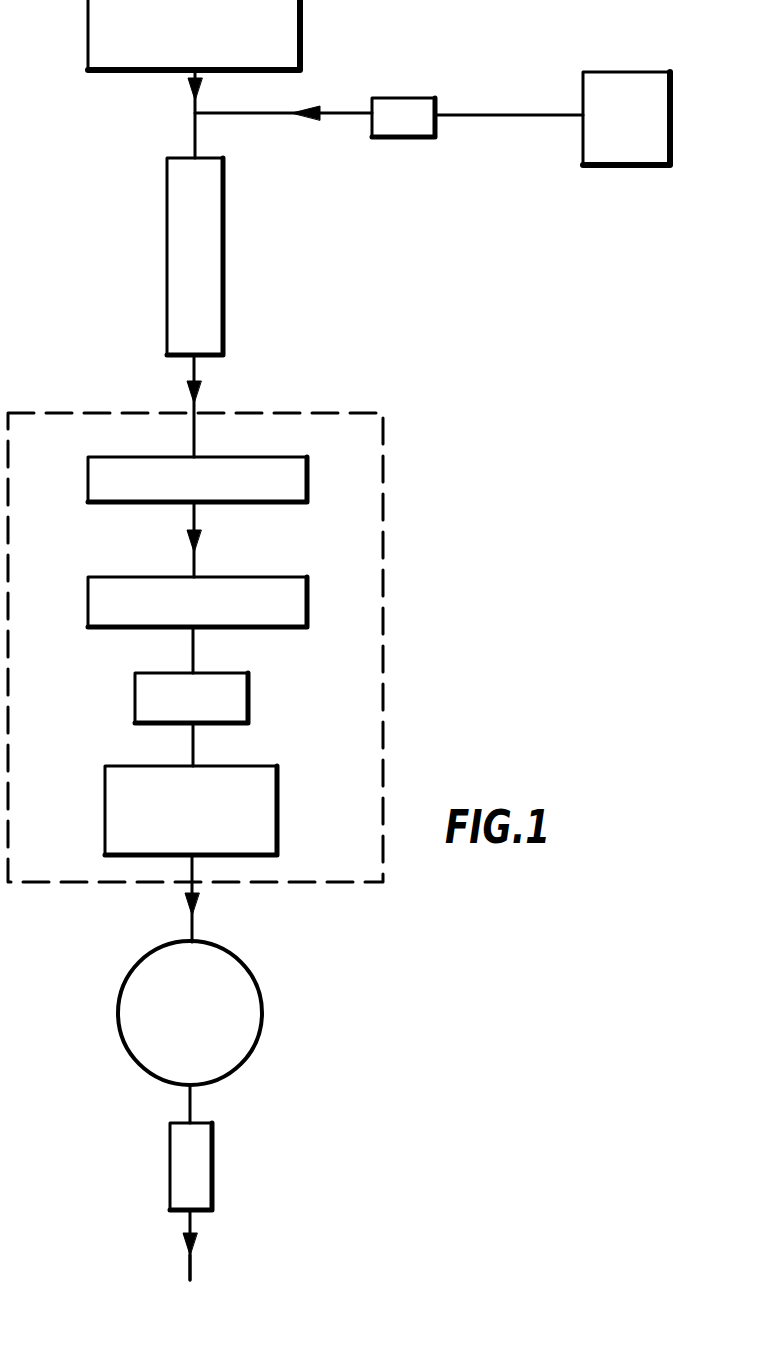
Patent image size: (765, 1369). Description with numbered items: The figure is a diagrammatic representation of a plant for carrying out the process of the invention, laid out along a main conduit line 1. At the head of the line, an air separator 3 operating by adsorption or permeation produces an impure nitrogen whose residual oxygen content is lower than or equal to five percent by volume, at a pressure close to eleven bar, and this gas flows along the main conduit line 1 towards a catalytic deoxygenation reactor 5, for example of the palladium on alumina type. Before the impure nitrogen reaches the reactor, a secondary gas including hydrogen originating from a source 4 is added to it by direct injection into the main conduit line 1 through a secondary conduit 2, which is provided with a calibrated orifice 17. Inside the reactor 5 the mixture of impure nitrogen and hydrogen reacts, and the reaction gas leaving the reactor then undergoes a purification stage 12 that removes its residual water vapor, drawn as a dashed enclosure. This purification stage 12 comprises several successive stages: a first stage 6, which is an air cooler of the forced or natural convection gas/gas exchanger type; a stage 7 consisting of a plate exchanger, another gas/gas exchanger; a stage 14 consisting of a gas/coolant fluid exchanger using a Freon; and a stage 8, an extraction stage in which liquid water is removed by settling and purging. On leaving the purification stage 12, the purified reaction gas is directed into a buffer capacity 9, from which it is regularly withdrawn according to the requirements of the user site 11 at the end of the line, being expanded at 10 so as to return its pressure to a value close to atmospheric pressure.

The main conduit line 1 is at (193, 104).
The secondary conduit 2 is at (518, 112).
The air separator 3 is at (300, 52).
The source 4 is at (583, 100).
The catalytic deoxygenation reactor 5 is at (223, 280).
The first stage 6 is at (307, 488).
The stage 7 is at (307, 612).
The stage 8 is at (277, 830).
The buffer capacity 9 is at (262, 1003).
The expansion 10 is at (212, 1185).
The user site 11 is at (190, 1266).
The purification stage 12 is at (335, 413).
The stage 14 is at (248, 695).
The calibrated orifice 17 is at (393, 98).